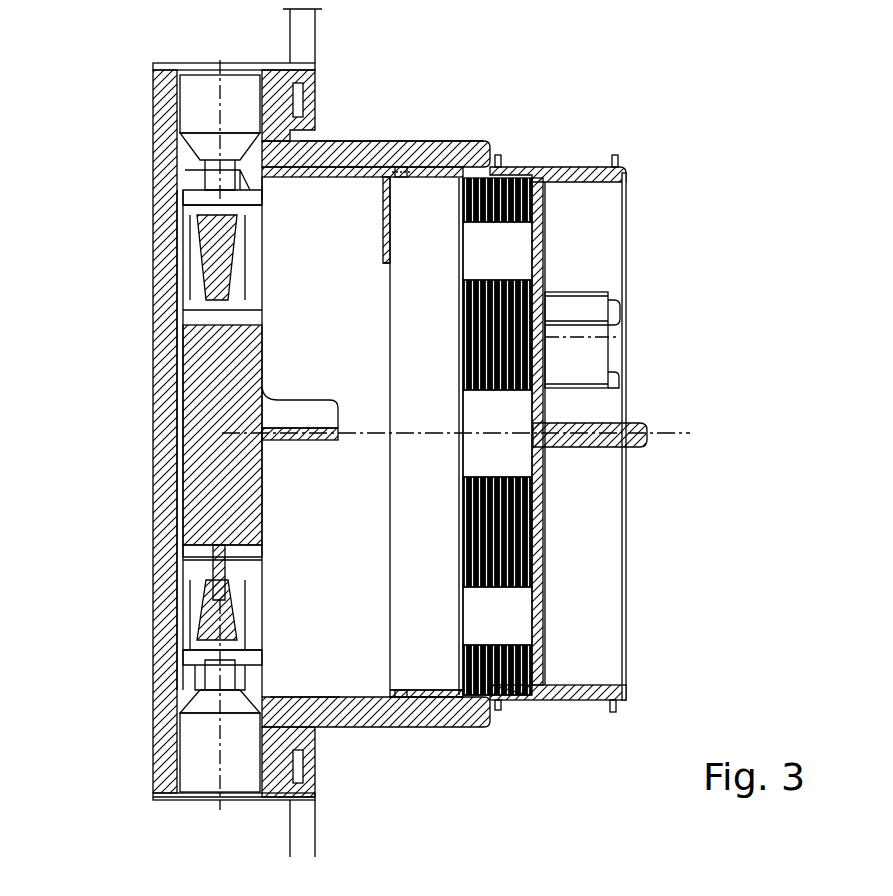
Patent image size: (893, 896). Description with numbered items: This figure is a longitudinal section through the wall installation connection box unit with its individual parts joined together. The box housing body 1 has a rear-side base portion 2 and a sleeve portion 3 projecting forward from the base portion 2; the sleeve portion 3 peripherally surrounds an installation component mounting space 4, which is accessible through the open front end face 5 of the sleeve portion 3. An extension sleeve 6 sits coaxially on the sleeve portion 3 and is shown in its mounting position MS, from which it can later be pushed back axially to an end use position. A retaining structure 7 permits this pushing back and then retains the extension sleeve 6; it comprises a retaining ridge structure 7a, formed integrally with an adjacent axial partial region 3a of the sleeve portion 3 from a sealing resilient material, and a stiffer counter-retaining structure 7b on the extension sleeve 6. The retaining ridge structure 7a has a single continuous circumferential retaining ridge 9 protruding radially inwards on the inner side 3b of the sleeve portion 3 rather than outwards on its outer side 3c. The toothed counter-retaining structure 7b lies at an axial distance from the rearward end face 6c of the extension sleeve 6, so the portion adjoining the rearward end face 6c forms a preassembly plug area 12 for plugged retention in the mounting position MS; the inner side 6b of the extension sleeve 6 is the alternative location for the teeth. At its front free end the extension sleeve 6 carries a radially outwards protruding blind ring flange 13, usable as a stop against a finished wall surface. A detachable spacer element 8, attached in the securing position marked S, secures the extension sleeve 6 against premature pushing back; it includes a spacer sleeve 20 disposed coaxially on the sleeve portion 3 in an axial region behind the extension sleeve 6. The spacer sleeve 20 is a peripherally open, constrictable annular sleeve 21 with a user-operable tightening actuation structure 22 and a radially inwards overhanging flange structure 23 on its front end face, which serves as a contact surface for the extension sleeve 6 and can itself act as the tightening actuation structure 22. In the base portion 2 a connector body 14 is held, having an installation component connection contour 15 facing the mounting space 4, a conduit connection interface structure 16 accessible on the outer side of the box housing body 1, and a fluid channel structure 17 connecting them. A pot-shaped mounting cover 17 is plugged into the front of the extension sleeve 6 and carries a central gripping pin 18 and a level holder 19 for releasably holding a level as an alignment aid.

The box housing body 1 is at (298, 732).
The base portion 2 is at (325, 856).
The sleeve portion 3 is at (343, 728).
The axial partial region 3a is at (394, 160).
The inner side of the sleeve portion 3b is at (320, 178).
The outer side of the sleeve portion 3c is at (347, 140).
The installation component mounting space 4 is at (280, 378).
The open front end face 5 is at (500, 705).
The extension sleeve 6 is at (518, 700).
The inner side of the extension sleeve 6b is at (448, 698).
The rearward end face of the extension sleeve 6c is at (388, 505).
The retaining structure 7 is at (420, 165).
The retaining ridge structure 7a is at (408, 698).
The counter-retaining structure 7b is at (435, 702).
The spacer element 8 is at (318, 696).
The retaining ridge 9 is at (400, 168).
The preassembly plug area 12 is at (408, 702).
The blind ring flange 13 is at (618, 710).
The connector body 14 is at (180, 330).
The installation component connection contour 15 is at (255, 293).
The conduit connection interface structure 16 is at (190, 75).
The fluid channel structure / mounting cover 17 is at (222, 212).
The gripping pin 18 is at (602, 448).
The level holder 19 is at (612, 330).
The spacer sleeve 20 is at (353, 178).
The annular sleeve 21 is at (283, 178).
The tightening actuation structure 22 is at (388, 262).
The flange structure 23 is at (385, 215).
The mounting position MS is at (505, 167).
The securing position S is at (290, 696).